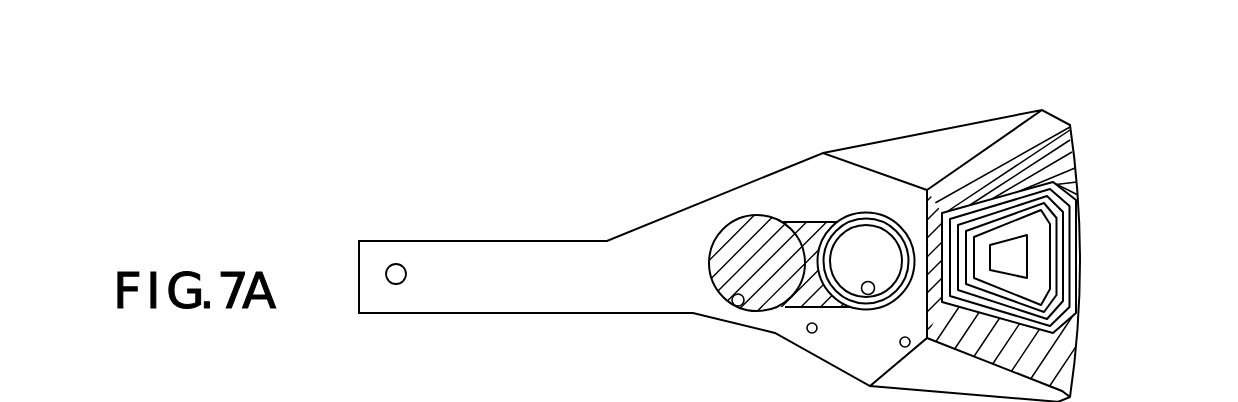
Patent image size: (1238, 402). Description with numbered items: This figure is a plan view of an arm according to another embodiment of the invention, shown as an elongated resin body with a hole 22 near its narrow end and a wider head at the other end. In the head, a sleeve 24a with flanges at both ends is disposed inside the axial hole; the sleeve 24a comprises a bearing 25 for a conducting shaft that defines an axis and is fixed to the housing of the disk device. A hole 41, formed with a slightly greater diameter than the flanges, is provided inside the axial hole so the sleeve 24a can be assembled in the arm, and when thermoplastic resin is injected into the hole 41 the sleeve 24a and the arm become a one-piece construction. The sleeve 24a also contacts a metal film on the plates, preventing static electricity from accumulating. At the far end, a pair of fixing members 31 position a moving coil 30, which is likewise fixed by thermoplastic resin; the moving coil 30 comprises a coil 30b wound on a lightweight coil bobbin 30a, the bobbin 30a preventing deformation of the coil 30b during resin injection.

The mounting hole 22 is at (396, 284).
The sleeve 24a is at (830, 225).
The bearing 25 is at (872, 295).
The fixing members 31 is at (933, 162).
The hole 41 is at (745, 303).
The moving coil 30 is at (1064, 257).
The coil bobbin 30a is at (1046, 272).
The coil 30b is at (1073, 307).